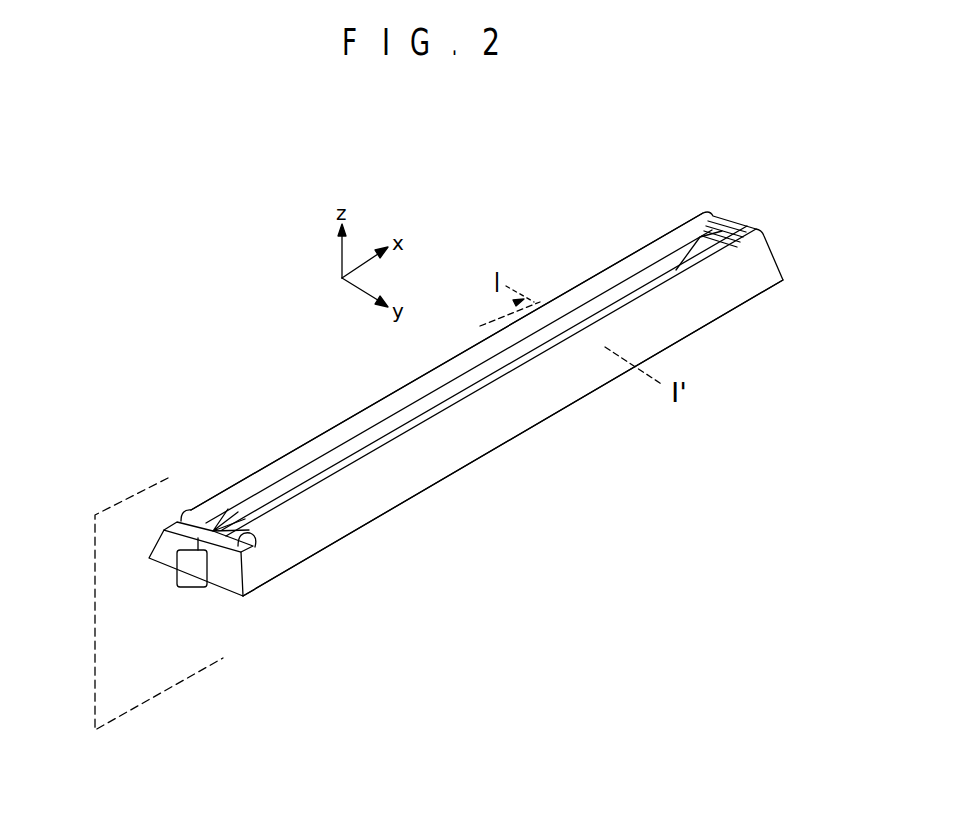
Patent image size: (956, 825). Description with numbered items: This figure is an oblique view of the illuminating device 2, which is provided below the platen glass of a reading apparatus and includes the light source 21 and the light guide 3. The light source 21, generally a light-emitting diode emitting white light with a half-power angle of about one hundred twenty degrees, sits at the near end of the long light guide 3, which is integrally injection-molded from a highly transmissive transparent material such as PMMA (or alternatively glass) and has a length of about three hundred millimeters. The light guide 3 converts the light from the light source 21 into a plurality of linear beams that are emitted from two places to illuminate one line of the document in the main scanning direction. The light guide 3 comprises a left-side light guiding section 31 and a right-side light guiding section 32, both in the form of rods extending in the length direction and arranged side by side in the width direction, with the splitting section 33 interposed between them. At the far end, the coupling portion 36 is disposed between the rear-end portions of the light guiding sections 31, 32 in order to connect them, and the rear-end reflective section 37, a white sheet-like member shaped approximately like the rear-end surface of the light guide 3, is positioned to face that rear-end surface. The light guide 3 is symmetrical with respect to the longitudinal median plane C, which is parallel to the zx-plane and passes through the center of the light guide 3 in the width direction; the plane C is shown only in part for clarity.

The illuminating device 2 is at (153, 243).
The light guide 3 is at (482, 382).
The light source 21 is at (192, 572).
The left-side light guiding section 31 is at (303, 447).
The right-side light guiding section 32 is at (366, 519).
The splitting section 33 is at (213, 528).
The coupling portion 36 is at (717, 221).
The rear-end reflective section 37 is at (739, 228).
The longitudinal median plane C is at (153, 690).